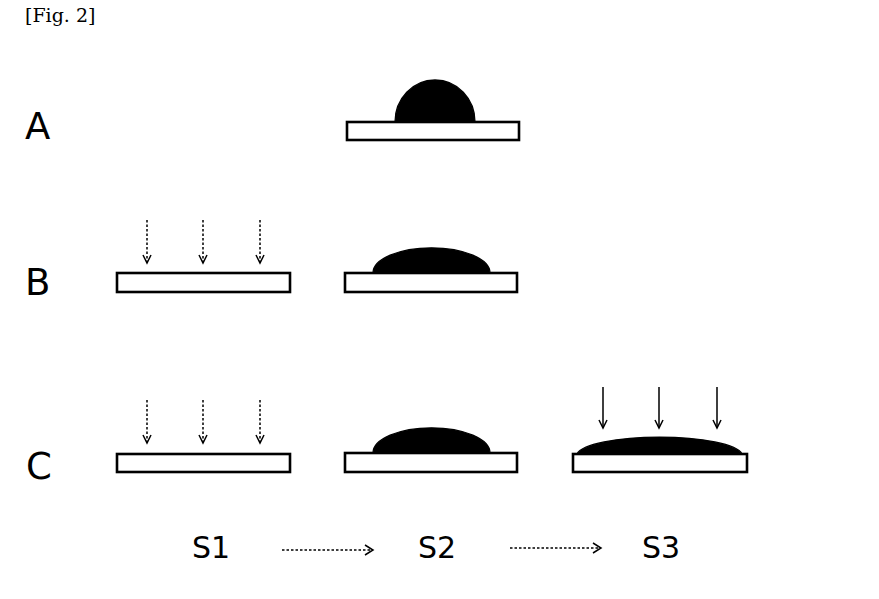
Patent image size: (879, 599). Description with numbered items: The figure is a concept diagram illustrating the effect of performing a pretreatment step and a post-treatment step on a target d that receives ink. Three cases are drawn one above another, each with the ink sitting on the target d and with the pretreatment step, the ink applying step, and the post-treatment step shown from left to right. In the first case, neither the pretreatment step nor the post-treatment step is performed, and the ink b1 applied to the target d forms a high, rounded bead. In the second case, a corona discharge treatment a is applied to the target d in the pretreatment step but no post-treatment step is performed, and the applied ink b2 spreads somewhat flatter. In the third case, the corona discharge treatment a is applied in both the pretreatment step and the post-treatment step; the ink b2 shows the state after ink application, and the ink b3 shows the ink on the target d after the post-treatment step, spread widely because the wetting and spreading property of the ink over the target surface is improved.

The corona discharge treatment a is at (432, 311).
The ink b1 is at (465, 90).
The ink b2 is at (472, 252).
The ink b3 is at (717, 440).
The target d is at (508, 123).